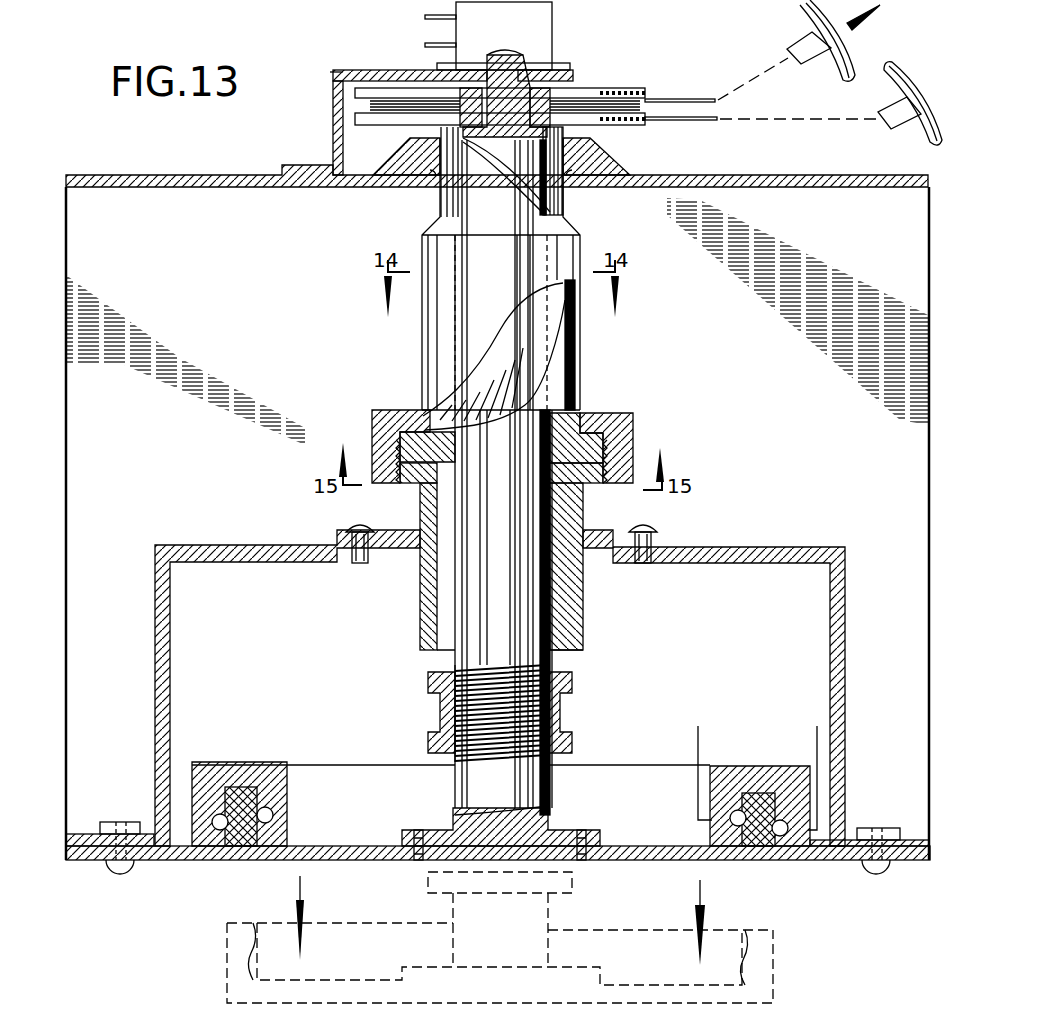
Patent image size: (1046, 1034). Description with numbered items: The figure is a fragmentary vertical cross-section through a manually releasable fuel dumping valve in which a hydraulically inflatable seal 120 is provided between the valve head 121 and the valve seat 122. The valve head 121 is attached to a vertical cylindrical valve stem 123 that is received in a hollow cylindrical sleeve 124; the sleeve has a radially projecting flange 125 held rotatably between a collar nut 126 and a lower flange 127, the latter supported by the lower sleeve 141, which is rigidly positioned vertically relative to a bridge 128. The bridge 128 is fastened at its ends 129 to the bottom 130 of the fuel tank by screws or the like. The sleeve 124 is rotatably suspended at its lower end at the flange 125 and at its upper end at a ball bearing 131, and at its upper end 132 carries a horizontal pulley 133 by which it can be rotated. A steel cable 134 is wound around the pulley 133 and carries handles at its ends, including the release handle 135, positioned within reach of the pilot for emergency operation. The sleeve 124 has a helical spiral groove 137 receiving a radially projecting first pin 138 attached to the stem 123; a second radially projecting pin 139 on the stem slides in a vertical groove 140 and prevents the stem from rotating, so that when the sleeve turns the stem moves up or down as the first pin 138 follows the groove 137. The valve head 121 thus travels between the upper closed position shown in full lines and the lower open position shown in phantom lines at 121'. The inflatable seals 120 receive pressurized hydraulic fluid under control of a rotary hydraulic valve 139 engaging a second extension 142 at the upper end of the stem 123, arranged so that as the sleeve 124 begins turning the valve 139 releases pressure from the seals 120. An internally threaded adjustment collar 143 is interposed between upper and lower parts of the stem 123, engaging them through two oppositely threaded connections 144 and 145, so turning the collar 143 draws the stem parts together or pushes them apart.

The hydraulically inflatable seal 120 is at (757, 788).
The valve head 121 is at (534, 857).
The valve head in open position 121' is at (500, 953).
The valve seat 122 is at (780, 798).
The valve stem 123 is at (515, 624).
The sleeve 124 is at (581, 379).
The flange 125 is at (622, 410).
The collar nut 126 is at (636, 427).
The lower flange 127 is at (586, 481).
The bridge 128 is at (781, 550).
The ends of bridge 129 is at (108, 820).
The bottom of fuel tank 130 is at (70, 834).
The ball bearing 131 is at (427, 187).
The upper end of sleeve 132 is at (523, 117).
The pulley 133 is at (626, 88).
The steel cable 134 is at (692, 122).
The release handle 135 is at (853, 57).
The helical spiral groove 137 is at (508, 345).
The first pin 138 is at (577, 283).
The rotary hydraulic valve 139 is at (542, 23).
The vertical groove 140 is at (442, 633).
The lower sleeve 141 is at (425, 45).
The second extension 142 is at (512, 58).
The adjustment collar 143 is at (563, 722).
The threaded connection 144 is at (568, 673).
The threaded connection 145 is at (467, 740).